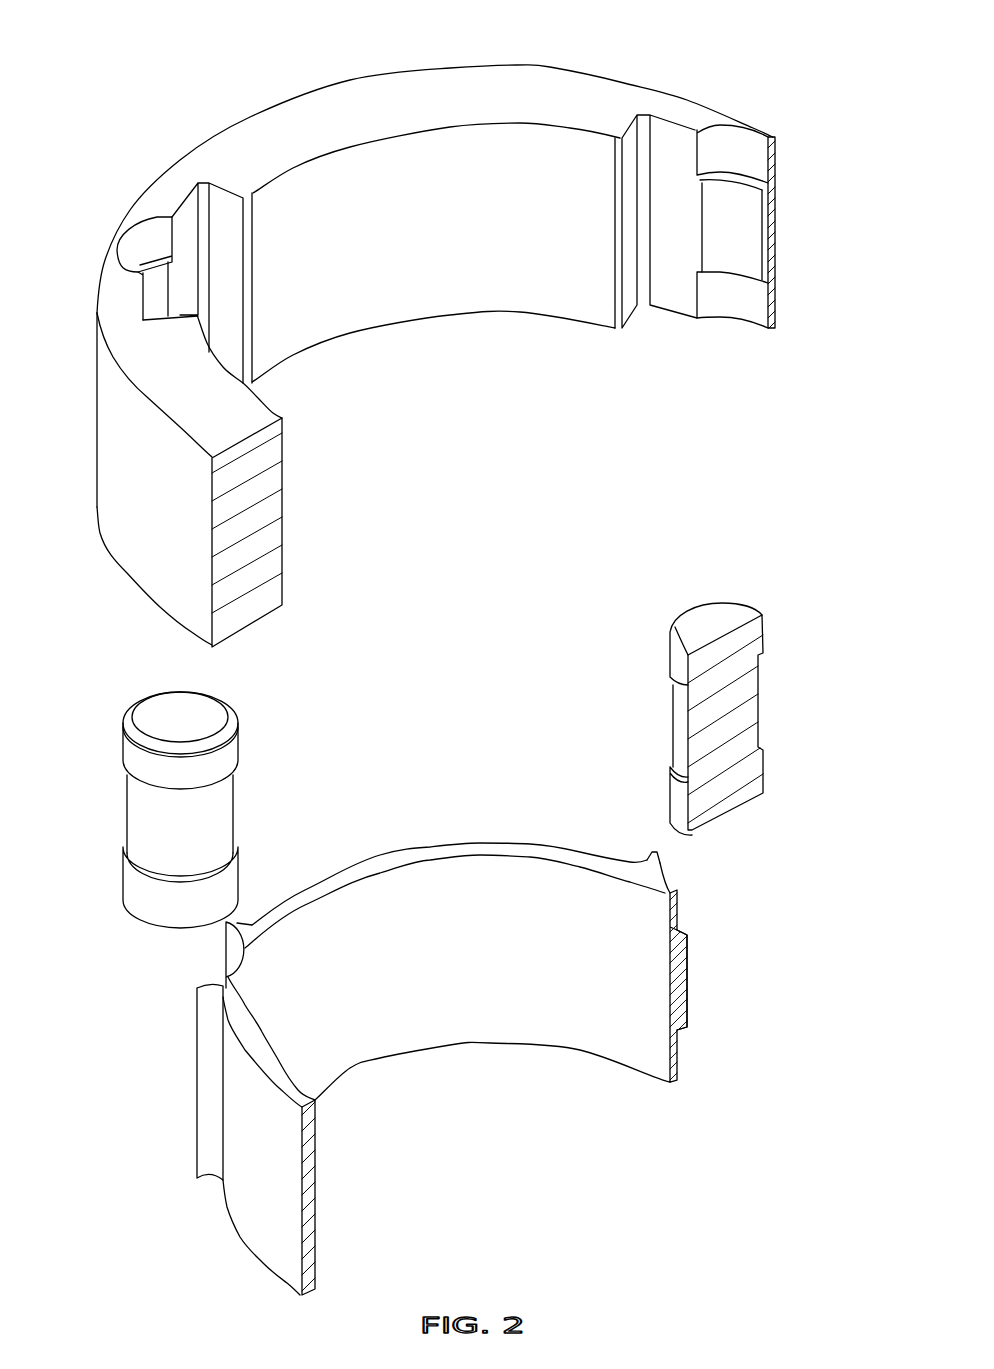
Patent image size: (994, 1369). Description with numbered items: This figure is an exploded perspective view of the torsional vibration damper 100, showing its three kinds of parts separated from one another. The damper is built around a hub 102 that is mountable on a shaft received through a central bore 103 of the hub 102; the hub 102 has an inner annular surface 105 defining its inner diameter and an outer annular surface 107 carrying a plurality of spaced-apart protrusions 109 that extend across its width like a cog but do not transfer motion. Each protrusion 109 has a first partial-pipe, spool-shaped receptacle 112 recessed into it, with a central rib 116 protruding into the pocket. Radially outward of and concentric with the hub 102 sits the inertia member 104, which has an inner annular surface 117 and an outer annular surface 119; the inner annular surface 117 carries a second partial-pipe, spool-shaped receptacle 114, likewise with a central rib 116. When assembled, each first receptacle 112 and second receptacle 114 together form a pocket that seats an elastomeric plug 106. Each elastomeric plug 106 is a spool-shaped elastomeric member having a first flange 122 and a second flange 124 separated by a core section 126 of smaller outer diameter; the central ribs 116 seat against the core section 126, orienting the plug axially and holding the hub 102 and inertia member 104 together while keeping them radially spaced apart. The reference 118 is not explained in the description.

The torsional vibration damper 100 is at (657, 69).
The hub 102 is at (317, 1237).
The central bore 103 is at (403, 1038).
The inertia member 104 is at (217, 152).
The inner annular surface 105 is at (417, 975).
The elastomeric plug 106 is at (145, 712).
The outer annular surface 107 is at (240, 1189).
The protrusion 109 is at (197, 1085).
The first partial-pipe, spool-shaped receptacle 112 is at (223, 957).
The second partial-pipe, spool-shaped receptacle 114 is at (133, 240).
The central rib 116 is at (753, 238).
The inner annular surface 117 is at (407, 246).
The pad 118 is at (687, 991).
The outer annular surface 119 is at (129, 512).
The first flange 122 is at (238, 748).
The second flange 124 is at (123, 883).
The core section 126 is at (127, 817).